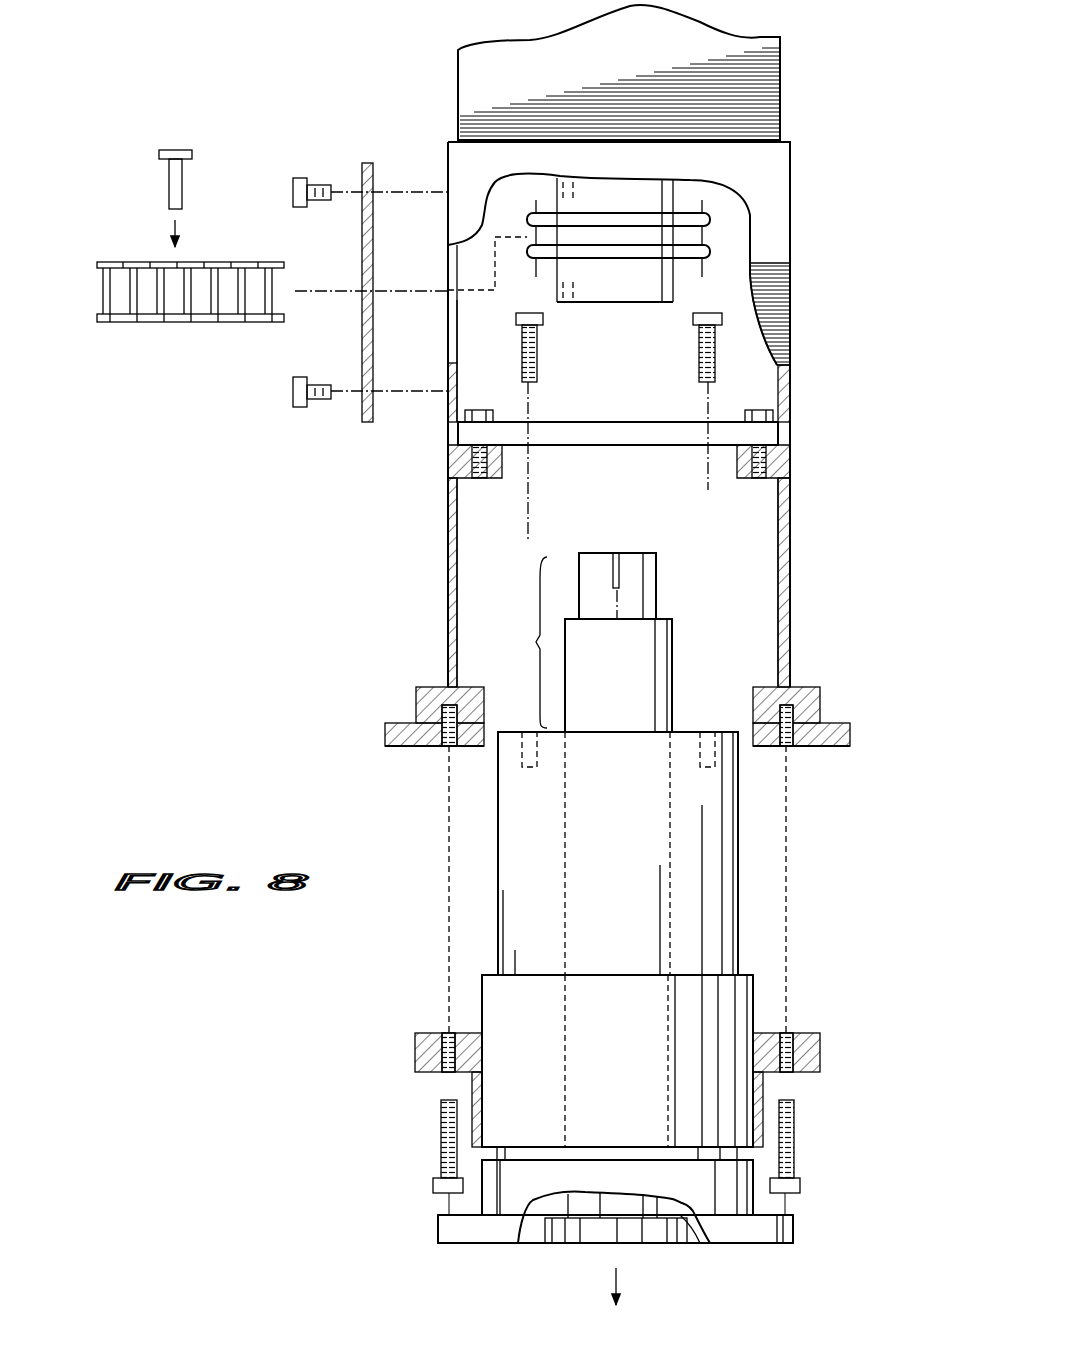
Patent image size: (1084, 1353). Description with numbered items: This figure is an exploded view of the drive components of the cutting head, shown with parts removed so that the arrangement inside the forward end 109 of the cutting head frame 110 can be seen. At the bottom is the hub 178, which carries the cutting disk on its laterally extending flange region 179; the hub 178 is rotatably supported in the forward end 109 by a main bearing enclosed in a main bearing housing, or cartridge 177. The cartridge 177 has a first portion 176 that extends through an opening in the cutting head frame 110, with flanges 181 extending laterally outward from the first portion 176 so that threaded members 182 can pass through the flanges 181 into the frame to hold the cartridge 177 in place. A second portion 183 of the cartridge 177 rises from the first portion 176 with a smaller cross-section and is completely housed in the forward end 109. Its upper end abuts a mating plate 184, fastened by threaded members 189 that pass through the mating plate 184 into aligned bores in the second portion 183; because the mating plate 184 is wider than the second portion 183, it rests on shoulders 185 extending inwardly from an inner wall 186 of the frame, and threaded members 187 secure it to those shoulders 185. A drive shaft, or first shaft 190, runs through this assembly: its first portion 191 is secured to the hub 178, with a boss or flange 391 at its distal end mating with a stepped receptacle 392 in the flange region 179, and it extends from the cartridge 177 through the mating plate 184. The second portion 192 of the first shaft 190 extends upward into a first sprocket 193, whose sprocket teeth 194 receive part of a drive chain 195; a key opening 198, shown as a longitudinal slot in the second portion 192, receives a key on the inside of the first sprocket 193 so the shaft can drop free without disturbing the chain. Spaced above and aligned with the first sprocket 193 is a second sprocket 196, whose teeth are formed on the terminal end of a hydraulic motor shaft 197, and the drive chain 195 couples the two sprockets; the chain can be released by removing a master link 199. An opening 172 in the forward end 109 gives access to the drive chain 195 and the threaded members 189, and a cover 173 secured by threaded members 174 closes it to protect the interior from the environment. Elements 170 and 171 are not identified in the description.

The forward end 109 is at (450, 608).
The cutting head frame 110 is at (395, 733).
The support block 170 is at (488, 75).
The upper housing 171 is at (452, 157).
The opening 172 is at (452, 317).
The cover 173 is at (367, 333).
The threaded members 174 is at (295, 190).
The first portion 176 is at (590, 1042).
The cartridge 177 is at (763, 991).
The hub 178 is at (550, 1192).
The flange region 179 is at (742, 1240).
The flanges 181 is at (430, 1033).
The threaded members 182 is at (440, 1148).
The second portion 183 is at (625, 853).
The mating plate 184 is at (597, 440).
The shoulders 185 is at (488, 478).
The inner wall 186 is at (460, 536).
The threaded members 187 is at (480, 410).
The threaded members 189 is at (708, 360).
The first shaft 190 is at (516, 642).
The first portion 191 is at (648, 660).
The second portion 192 is at (648, 595).
The first sprocket 193 is at (630, 280).
The sprocket teeth 194 is at (713, 252).
The drive chain 195 is at (143, 323).
The second sprocket 196 is at (688, 210).
The hydraulic motor shaft 197 is at (598, 195).
The key opening 198 is at (617, 570).
The master link 199 is at (178, 148).
The flange 391 is at (605, 1240).
The stepped receptacle 392 is at (692, 1235).